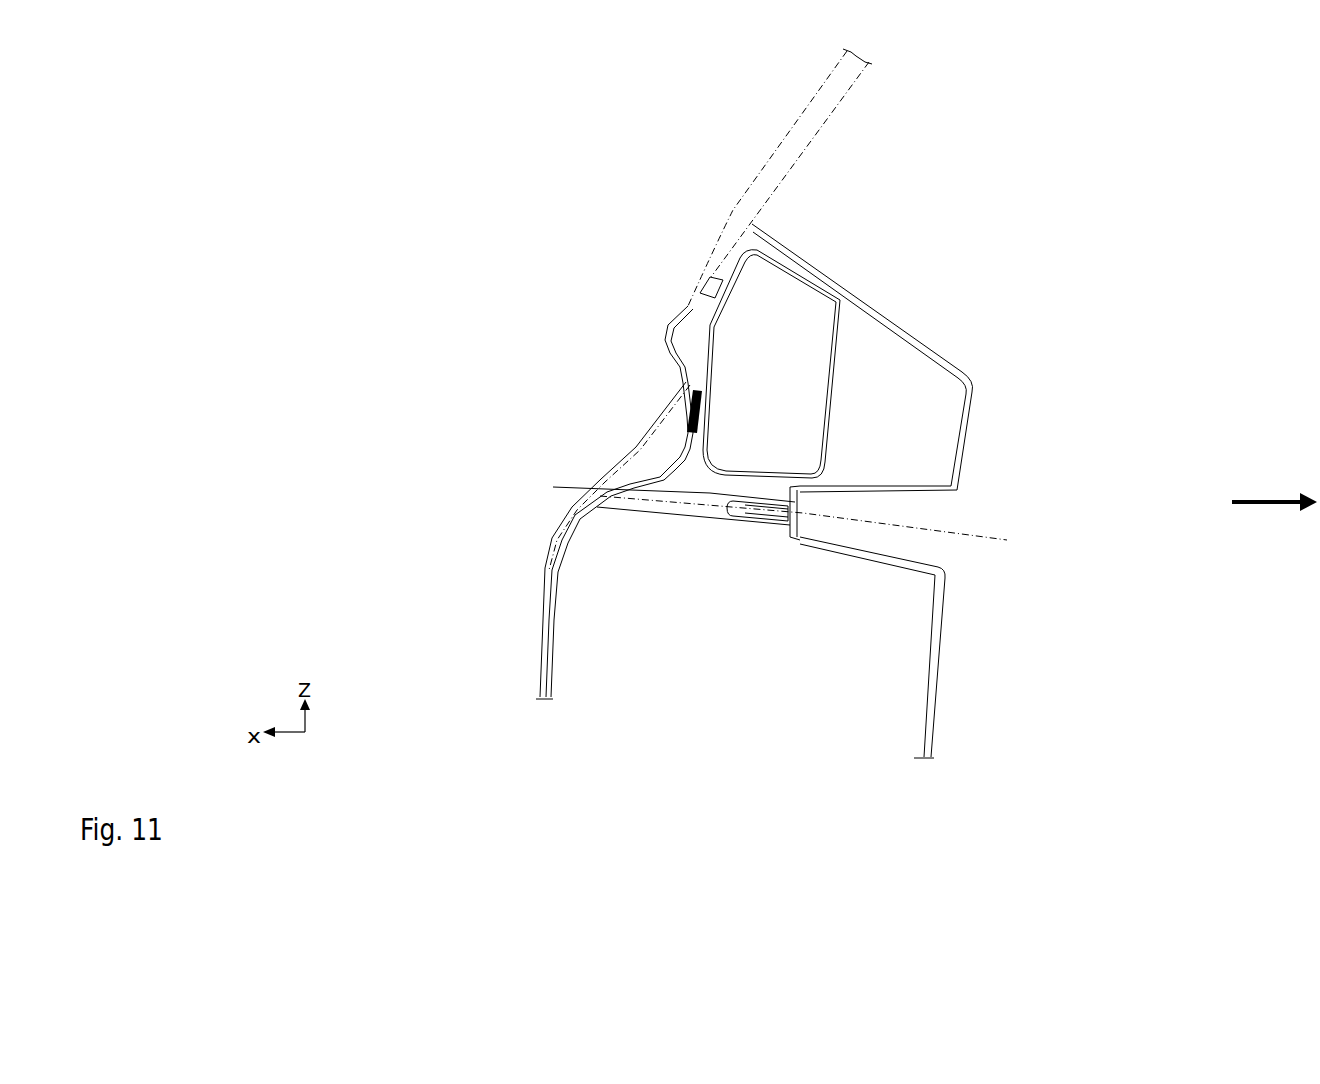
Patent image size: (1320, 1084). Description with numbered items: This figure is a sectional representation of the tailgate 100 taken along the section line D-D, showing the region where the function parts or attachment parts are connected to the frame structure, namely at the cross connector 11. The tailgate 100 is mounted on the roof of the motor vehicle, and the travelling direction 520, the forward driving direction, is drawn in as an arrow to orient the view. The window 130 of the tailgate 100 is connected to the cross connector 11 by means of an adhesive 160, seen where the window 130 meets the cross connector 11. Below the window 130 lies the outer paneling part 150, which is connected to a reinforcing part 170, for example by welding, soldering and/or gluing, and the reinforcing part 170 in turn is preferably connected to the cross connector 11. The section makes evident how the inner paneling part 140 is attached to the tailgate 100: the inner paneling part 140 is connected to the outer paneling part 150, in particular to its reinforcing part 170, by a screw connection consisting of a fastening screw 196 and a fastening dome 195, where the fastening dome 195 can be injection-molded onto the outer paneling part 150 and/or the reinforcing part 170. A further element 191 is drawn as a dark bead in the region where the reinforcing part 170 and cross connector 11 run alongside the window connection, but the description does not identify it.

The tailgate 100 is at (928, 145).
The cross connector 11 is at (832, 357).
The window 130 is at (802, 137).
The inner paneling part 140 is at (937, 645).
The outer paneling part 150 is at (540, 613).
The adhesive 160 is at (718, 290).
The reinforcing part 170 is at (672, 467).
The adhesive bead 191 is at (690, 412).
The fastening dome 195 is at (610, 503).
The fastening screw 196 is at (803, 503).
The travelling direction 520 is at (1260, 507).